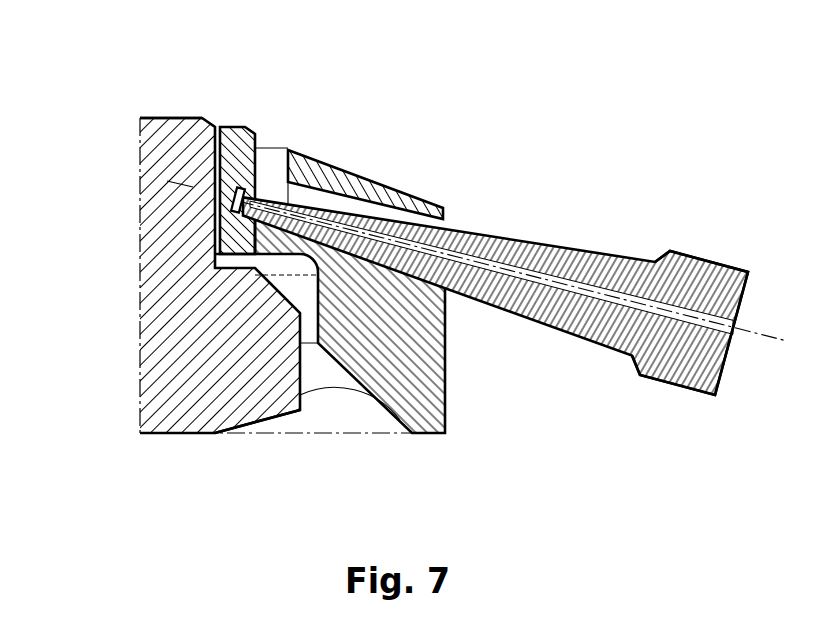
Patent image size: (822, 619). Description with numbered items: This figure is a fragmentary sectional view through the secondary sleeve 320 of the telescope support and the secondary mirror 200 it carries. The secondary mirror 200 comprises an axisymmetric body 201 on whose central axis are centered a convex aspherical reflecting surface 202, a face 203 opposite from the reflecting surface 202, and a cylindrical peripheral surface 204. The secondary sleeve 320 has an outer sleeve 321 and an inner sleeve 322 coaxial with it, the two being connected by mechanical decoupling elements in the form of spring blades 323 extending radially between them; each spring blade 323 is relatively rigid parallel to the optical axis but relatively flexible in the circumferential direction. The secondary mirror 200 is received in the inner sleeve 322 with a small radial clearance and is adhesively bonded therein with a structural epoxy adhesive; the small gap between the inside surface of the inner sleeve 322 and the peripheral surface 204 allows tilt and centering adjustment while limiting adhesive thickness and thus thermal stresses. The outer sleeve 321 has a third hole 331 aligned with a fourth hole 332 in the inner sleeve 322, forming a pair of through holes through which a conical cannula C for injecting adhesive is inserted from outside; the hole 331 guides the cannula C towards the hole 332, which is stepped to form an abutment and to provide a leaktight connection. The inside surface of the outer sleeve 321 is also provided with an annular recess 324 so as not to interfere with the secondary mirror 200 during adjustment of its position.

The secondary mirror 200 is at (127, 277).
The axisymmetric body 201 is at (155, 317).
The reflecting surface 202 is at (267, 432).
The face 203 is at (168, 106).
The peripheral surface 204 is at (273, 166).
The secondary sleeve 320 is at (474, 435).
The outer sleeve 321 is at (430, 378).
The inner sleeve 322 is at (240, 127).
The spring blade 323 is at (254, 186).
The annular recess 324 is at (318, 318).
The third hole 331 is at (350, 267).
The fourth hole 332 is at (215, 227).
The cannula C is at (687, 384).